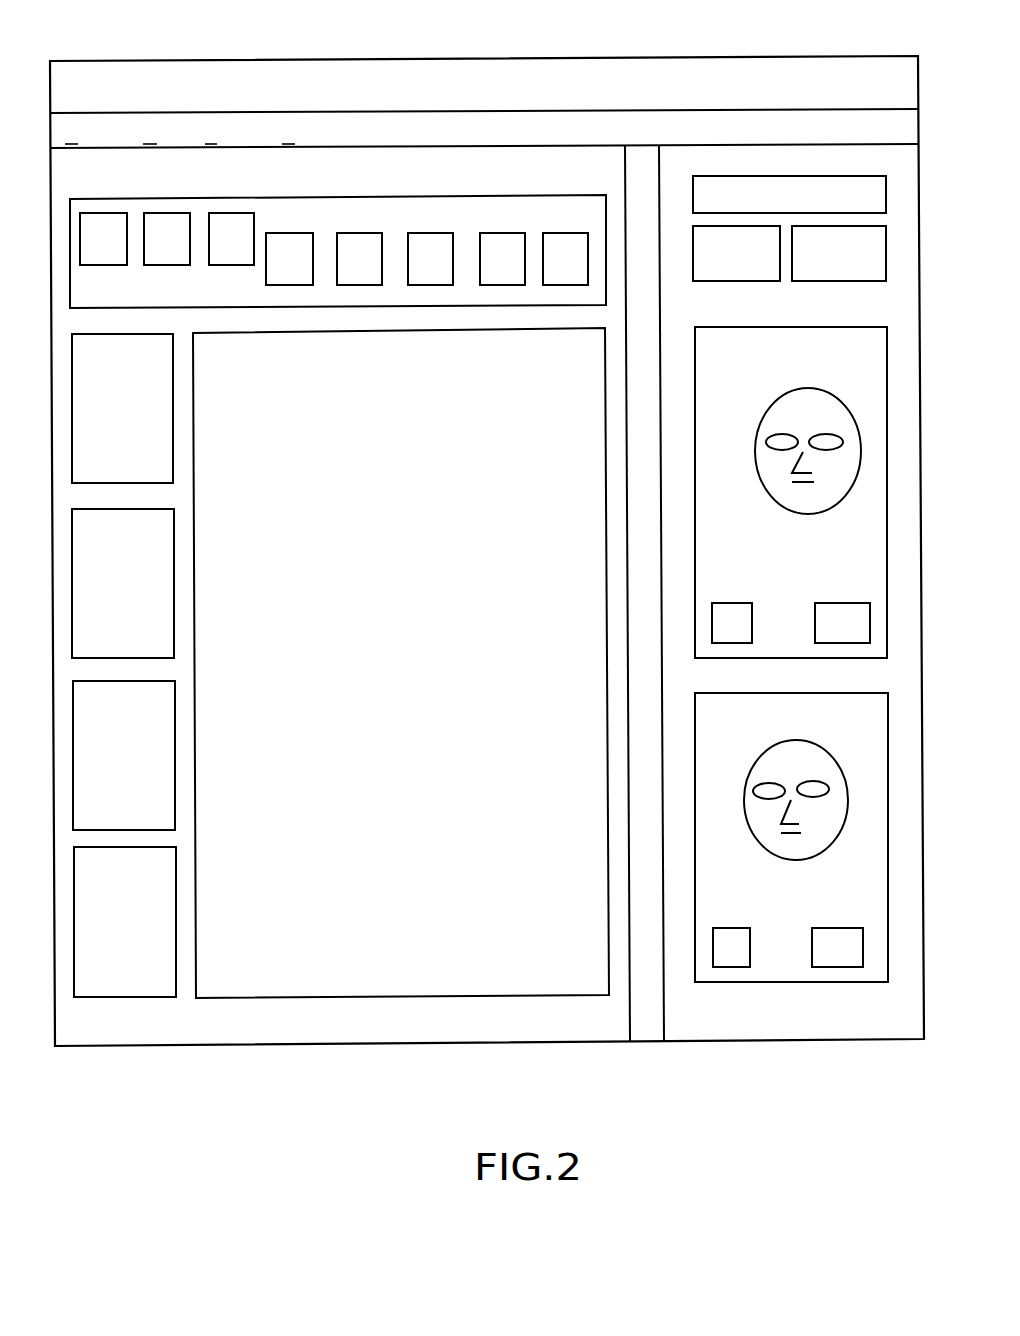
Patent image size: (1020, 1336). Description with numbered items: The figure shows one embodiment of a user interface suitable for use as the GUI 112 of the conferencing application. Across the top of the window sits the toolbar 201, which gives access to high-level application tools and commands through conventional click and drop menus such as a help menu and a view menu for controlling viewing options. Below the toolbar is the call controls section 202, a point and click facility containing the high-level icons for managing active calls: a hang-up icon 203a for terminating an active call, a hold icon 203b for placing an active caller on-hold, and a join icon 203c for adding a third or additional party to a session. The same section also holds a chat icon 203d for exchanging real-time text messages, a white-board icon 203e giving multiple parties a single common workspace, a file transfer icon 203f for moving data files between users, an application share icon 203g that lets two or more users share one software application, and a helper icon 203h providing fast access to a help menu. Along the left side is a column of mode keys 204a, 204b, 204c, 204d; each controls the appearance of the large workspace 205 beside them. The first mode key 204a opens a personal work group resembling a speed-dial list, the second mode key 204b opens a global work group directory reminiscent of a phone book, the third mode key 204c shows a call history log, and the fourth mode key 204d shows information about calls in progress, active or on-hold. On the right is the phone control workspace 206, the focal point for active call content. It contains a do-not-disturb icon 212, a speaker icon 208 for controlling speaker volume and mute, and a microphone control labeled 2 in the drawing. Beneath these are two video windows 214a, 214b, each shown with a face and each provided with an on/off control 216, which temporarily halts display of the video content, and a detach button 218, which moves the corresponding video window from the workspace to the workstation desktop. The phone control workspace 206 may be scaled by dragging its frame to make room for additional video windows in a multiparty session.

The graphical user interface 112 is at (208, 38).
The toolbar 201 is at (432, 145).
The call controls section 202 is at (240, 203).
The hang-up icon 203a is at (123, 248).
The hold icon 203b is at (187, 248).
The join icon 203c is at (251, 248).
The chat icon 203d is at (309, 268).
The white-board icon 203e is at (379, 268).
The file transfer icon 203f is at (449, 268).
The application share icon 203g is at (522, 268).
The helper icon 203h is at (585, 268).
The first mode key 204a is at (147, 438).
The second mode key 204b is at (148, 613).
The third mode key 204c is at (149, 786).
The fourth mode key 204d is at (150, 953).
The workspace 205 is at (583, 371).
The phone control workspace 206 is at (698, 1072).
The do-not-disturb icon 212 is at (835, 207).
The microphone control 2 is at (745, 274).
The speaker icon 208 is at (857, 274).
The video window 214a is at (768, 370).
The video window 214b is at (751, 742).
The on/off control 216 is at (732, 610).
The detach button 218 is at (840, 610).